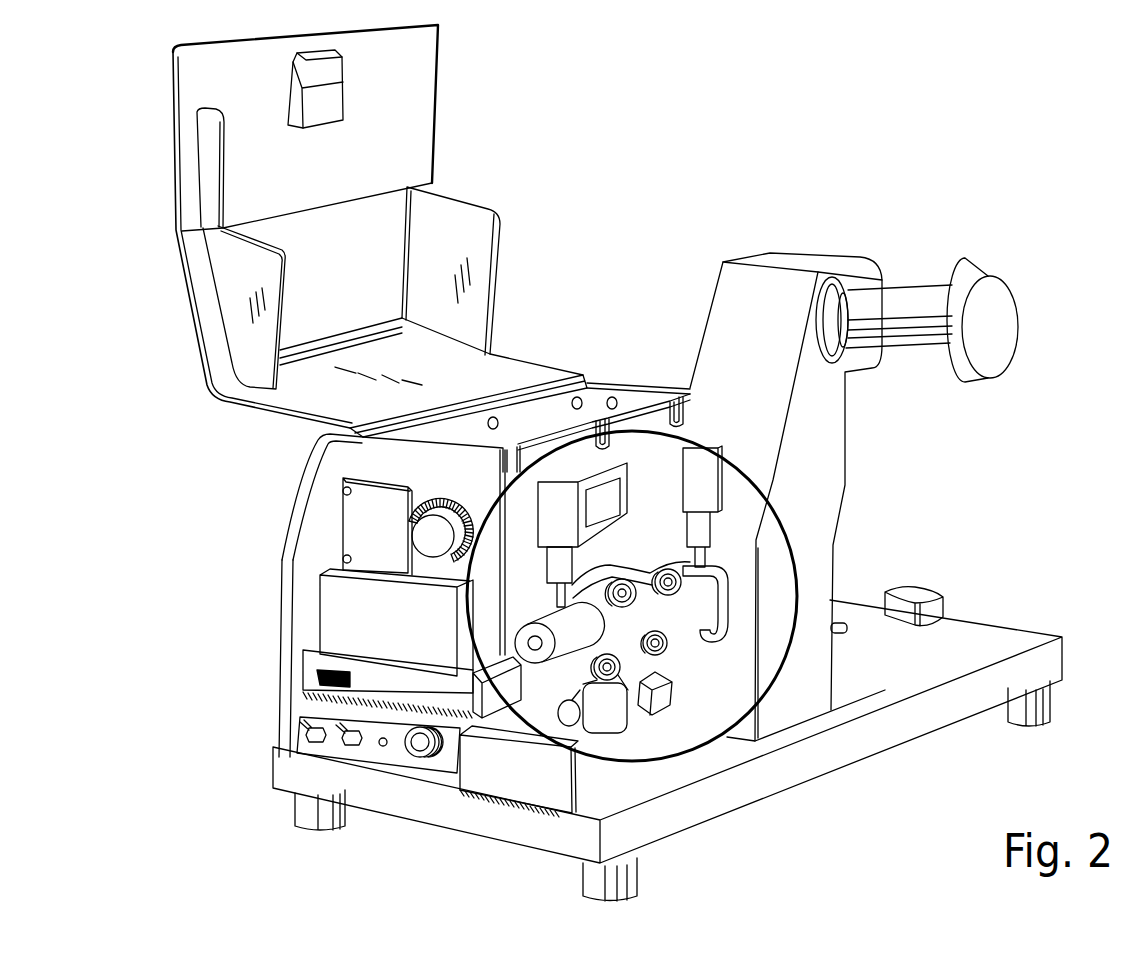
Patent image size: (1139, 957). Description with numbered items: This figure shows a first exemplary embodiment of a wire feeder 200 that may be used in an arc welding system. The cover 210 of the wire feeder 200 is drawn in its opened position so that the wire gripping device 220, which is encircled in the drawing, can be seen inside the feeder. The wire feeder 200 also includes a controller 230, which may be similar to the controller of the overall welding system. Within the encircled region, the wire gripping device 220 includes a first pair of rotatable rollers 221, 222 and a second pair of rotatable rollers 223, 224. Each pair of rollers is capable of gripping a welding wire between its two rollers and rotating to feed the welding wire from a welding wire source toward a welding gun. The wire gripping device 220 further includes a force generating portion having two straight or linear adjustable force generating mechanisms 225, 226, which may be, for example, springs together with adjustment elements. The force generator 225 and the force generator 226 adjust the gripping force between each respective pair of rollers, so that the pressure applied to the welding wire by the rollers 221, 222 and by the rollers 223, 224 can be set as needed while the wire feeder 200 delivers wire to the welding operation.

The wire feeder 200 is at (745, 130).
The cover 210 is at (173, 93).
The wire gripping device 220 is at (785, 527).
The rotatable roller 221 is at (568, 595).
The rotatable roller 222 is at (634, 698).
The rotatable roller 223 is at (637, 567).
The rotatable roller 224 is at (668, 648).
The adjustable force generating mechanism 225 is at (550, 497).
The adjustable force generating mechanism 226 is at (703, 470).
The controller 230 is at (358, 597).